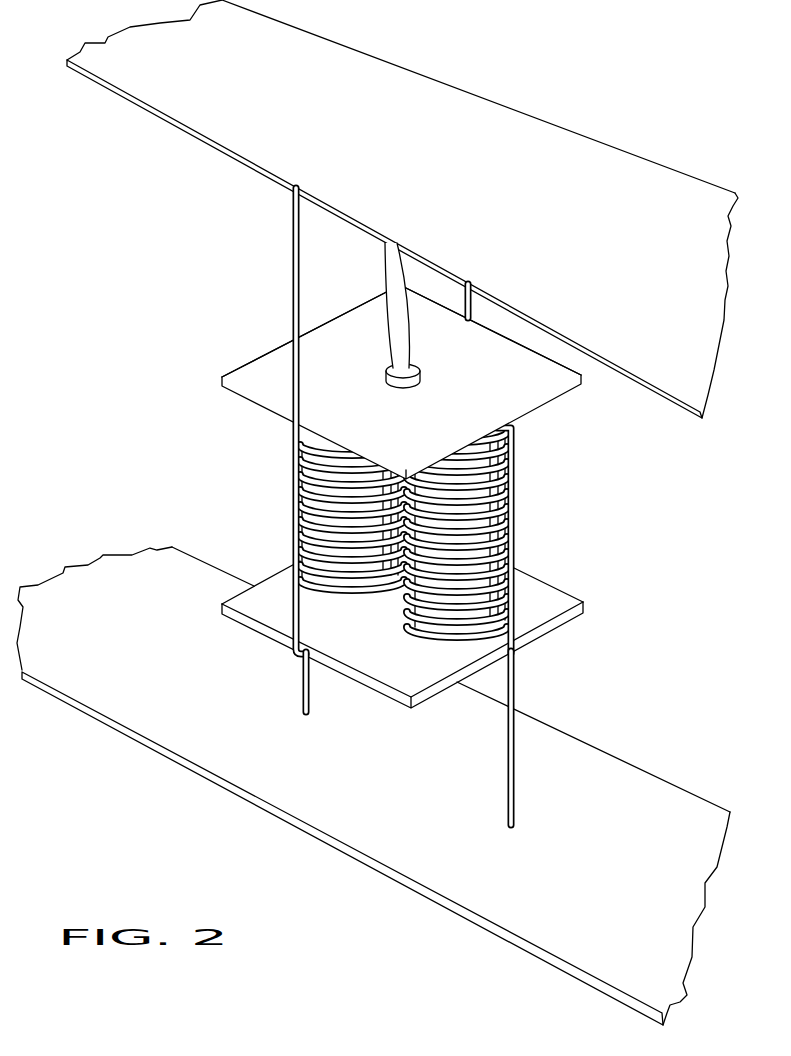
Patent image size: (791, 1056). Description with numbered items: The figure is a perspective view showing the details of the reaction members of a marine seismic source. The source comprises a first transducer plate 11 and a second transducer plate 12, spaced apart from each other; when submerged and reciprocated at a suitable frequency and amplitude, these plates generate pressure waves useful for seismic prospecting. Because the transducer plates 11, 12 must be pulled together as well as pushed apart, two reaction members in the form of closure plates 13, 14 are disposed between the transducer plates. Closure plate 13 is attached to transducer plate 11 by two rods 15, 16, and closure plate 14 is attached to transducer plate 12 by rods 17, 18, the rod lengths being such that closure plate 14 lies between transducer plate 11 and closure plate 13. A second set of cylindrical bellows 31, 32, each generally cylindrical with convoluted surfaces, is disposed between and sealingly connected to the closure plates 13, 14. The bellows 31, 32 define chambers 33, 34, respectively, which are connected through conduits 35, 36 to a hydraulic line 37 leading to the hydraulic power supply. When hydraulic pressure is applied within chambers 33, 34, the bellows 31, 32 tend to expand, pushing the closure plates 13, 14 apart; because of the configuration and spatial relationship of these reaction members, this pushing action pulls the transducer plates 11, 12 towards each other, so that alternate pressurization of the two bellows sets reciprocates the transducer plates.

The first transducer plate 11 is at (546, 183).
The second transducer plate 12 is at (435, 843).
The closure plate 13 is at (556, 621).
The closure plate 14 is at (550, 398).
The rod 15 is at (295, 247).
The rod 16 is at (472, 300).
The rod 17 is at (305, 687).
The rod 18 is at (508, 684).
The cylindrical bellows 31 is at (360, 534).
The cylindrical bellows 32 is at (525, 523).
The chamber 33 is at (367, 519).
The chamber 34 is at (478, 550).
The conduit 35 is at (343, 352).
The conduit 36 is at (463, 417).
The hydraulic line 37 is at (398, 300).